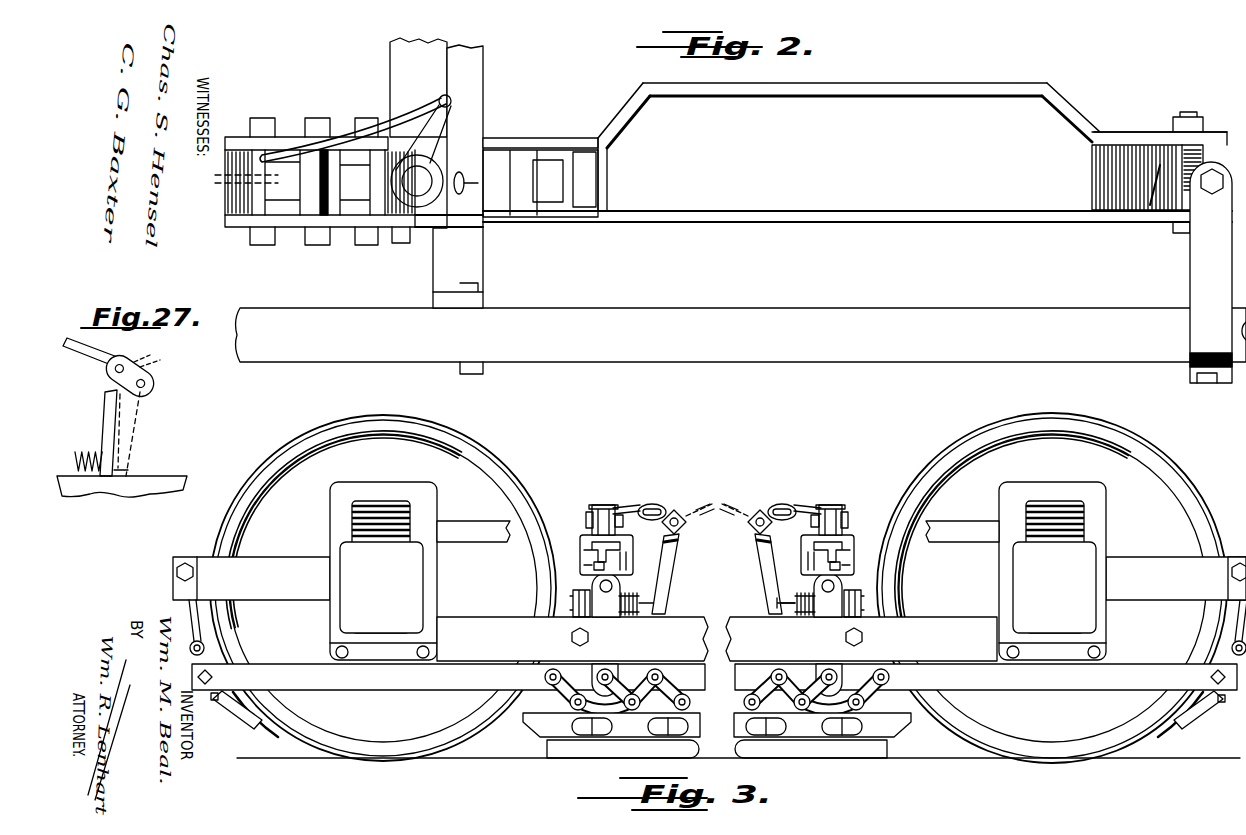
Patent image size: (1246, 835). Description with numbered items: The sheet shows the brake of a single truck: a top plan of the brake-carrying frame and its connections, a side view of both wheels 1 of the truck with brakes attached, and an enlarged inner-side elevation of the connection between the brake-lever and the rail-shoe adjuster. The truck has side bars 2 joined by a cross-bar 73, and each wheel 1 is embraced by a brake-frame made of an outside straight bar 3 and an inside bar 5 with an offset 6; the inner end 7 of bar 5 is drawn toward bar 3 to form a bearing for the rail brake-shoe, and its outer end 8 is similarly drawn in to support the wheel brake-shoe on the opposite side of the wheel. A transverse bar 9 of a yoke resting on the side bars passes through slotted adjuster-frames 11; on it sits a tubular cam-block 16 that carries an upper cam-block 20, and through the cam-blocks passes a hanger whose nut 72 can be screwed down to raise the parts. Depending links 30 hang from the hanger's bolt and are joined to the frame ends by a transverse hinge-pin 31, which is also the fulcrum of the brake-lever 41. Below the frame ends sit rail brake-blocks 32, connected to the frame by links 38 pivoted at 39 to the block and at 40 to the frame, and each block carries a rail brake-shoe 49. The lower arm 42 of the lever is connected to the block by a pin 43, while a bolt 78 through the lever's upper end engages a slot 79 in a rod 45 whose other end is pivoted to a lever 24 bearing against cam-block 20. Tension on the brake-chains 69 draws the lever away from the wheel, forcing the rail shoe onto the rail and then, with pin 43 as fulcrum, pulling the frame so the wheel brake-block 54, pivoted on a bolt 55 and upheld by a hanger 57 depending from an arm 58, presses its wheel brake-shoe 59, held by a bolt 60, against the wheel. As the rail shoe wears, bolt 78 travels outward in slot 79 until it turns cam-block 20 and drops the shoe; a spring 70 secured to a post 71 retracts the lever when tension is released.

In FIG. 3, the wheels 1 is at (468, 488).
In FIG. 2, the side bars 2 is at (798, 318).
In FIG. 3, the side bars 2 is at (900, 627).
In FIG. 2, the outside straight bar 3 is at (908, 220).
In FIG. 3, the outside straight bar 3 is at (277, 667).
In FIG. 2, the inside bar 5 is at (628, 120).
In FIG. 2, the offset 6 is at (882, 92).
In FIG. 2, the inner end of bar 5 7 is at (562, 144).
In FIG. 2, the outer end of bar 5 8 is at (1158, 140).
In FIG. 2, the transverse bar 9 is at (390, 65).
In FIG. 3, the transverse bar 9 is at (627, 560).
In FIG. 3, the adjuster-frames 11 is at (592, 565).
In FIG. 3, the cam-block 16 is at (634, 545).
In FIG. 3, the cam-block 20 is at (620, 522).
In FIG. 2, the lever 24 is at (462, 128).
In FIG. 3, the lever 24 is at (586, 516).
In FIG. 2, the depending link 30 is at (408, 243).
In FIG. 3, the depending link 30 is at (607, 604).
In FIG. 3, the transverse hinge-pin 31 is at (608, 664).
In FIG. 3, the rail brake-blocks 32 is at (700, 712).
In FIG. 3, the links 38 is at (562, 701).
In FIG. 3, the pivot-pins 39 is at (588, 705).
In FIG. 3, the pivot 40 is at (544, 677).
In FIG. 3, the brake-lever 41 is at (672, 576).
In FIG. 27, the brake-lever 41 is at (103, 424).
In FIG. 3, the lower arm 42 is at (614, 677).
In FIG. 3, the pin 43 is at (640, 707).
In FIG. 2, the rod 45 is at (384, 122).
In FIG. 3, the rod 45 is at (628, 504).
In FIG. 27, the rod 45 is at (80, 362).
In FIG. 3, the rail brake-shoe 49 is at (547, 747).
In FIG. 3, the wheel brake-block 54 is at (244, 718).
In FIG. 3, the bolt 55 is at (214, 677).
In FIG. 3, the hanger 57 is at (190, 634).
In FIG. 2, the arm 58 is at (1192, 268).
In FIG. 3, the arm 58 is at (1233, 556).
In FIG. 2, the wheel brake-shoe 59 is at (1151, 207).
In FIG. 3, the wheel brake-shoe 59 is at (262, 713).
In FIG. 3, the bolt 60 is at (212, 702).
In FIG. 3, the brake-chains 69 is at (714, 498).
In FIG. 3, the spring 70 is at (795, 607).
In FIG. 3, the post 71 is at (578, 602).
In FIG. 2, the nut 72 is at (420, 170).
In FIG. 3, the nut 72 is at (601, 505).
In FIG. 2, the cross-bar 73 is at (483, 268).
In FIG. 3, the pin or bolt 78 is at (702, 518).
In FIG. 27, the pin or bolt 78 is at (106, 386).
In FIG. 3, the slot 79 is at (674, 510).
In FIG. 27, the slot 79 is at (151, 375).